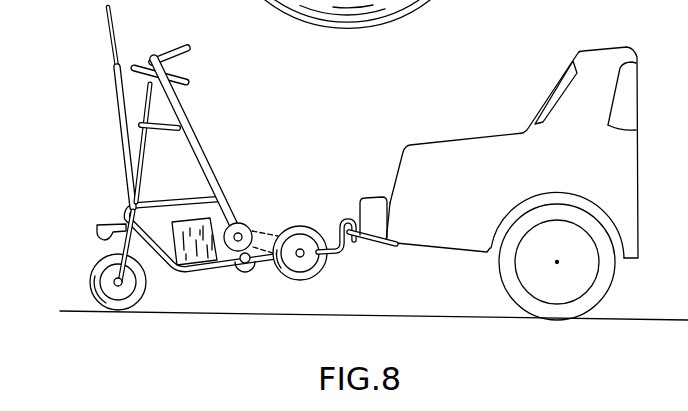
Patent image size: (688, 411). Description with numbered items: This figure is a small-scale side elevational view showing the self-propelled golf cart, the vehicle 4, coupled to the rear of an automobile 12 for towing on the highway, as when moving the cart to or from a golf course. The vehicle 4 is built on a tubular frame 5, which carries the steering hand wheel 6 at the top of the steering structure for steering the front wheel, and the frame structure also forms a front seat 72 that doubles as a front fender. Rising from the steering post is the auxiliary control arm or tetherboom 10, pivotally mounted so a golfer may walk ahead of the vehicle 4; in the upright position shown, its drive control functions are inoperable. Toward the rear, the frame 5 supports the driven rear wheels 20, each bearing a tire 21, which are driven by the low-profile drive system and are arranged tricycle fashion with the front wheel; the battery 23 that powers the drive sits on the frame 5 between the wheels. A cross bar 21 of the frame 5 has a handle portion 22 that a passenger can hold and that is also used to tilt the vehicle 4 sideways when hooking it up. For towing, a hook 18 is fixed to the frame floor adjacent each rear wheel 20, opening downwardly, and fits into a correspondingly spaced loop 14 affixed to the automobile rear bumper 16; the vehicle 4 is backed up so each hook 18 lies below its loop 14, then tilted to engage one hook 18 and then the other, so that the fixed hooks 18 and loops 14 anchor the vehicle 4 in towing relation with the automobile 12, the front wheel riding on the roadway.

The vehicle 4 is at (198, 270).
The tubular frame 5 is at (214, 270).
The steering hand wheel 6 is at (188, 80).
The auxiliary control arm or tetherboom 10 is at (118, 99).
The automobile 12 is at (466, 189).
The loops 14 is at (363, 247).
The automobile rear bumper 16 is at (372, 210).
The hook 18 is at (334, 222).
The driven rear wheels 20 is at (319, 262).
The tire 21 is at (283, 273).
The handle portion 22 is at (172, 48).
The battery 23 is at (199, 236).
The front seat 72 is at (110, 222).